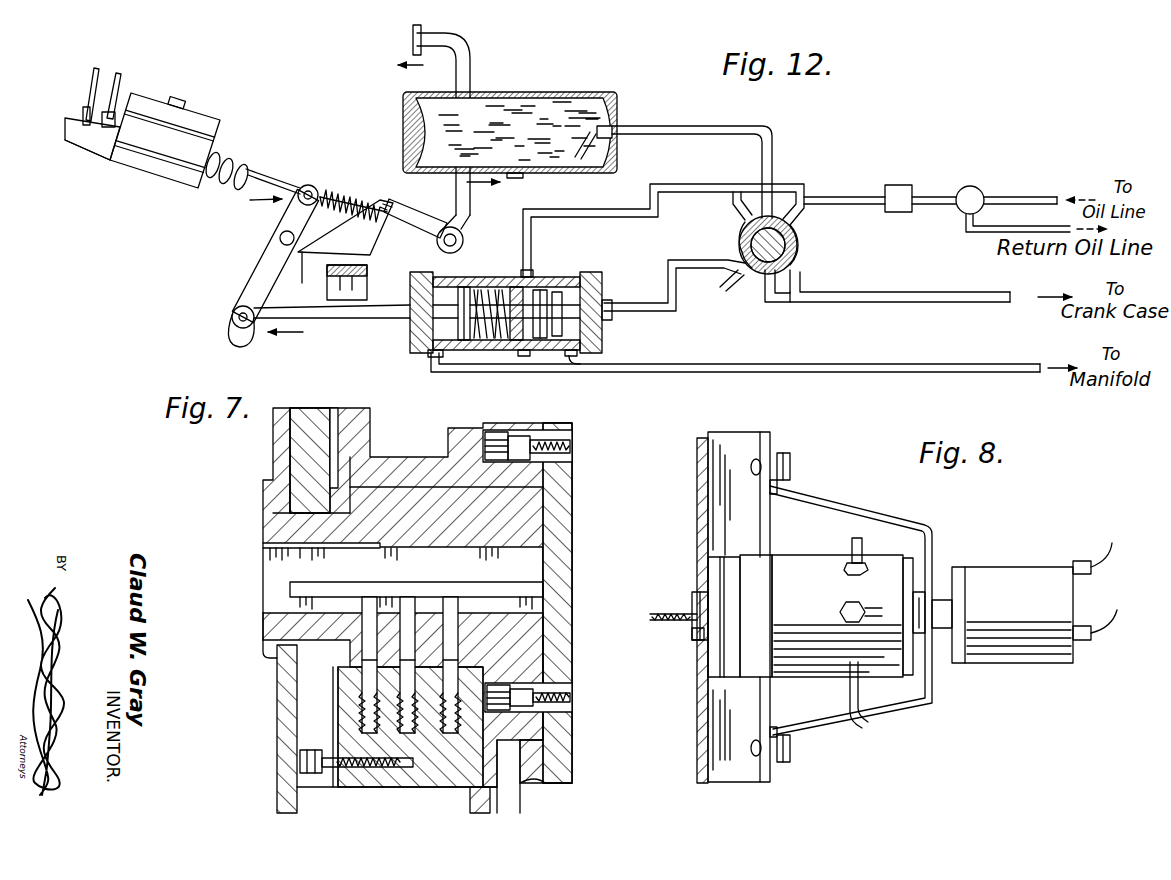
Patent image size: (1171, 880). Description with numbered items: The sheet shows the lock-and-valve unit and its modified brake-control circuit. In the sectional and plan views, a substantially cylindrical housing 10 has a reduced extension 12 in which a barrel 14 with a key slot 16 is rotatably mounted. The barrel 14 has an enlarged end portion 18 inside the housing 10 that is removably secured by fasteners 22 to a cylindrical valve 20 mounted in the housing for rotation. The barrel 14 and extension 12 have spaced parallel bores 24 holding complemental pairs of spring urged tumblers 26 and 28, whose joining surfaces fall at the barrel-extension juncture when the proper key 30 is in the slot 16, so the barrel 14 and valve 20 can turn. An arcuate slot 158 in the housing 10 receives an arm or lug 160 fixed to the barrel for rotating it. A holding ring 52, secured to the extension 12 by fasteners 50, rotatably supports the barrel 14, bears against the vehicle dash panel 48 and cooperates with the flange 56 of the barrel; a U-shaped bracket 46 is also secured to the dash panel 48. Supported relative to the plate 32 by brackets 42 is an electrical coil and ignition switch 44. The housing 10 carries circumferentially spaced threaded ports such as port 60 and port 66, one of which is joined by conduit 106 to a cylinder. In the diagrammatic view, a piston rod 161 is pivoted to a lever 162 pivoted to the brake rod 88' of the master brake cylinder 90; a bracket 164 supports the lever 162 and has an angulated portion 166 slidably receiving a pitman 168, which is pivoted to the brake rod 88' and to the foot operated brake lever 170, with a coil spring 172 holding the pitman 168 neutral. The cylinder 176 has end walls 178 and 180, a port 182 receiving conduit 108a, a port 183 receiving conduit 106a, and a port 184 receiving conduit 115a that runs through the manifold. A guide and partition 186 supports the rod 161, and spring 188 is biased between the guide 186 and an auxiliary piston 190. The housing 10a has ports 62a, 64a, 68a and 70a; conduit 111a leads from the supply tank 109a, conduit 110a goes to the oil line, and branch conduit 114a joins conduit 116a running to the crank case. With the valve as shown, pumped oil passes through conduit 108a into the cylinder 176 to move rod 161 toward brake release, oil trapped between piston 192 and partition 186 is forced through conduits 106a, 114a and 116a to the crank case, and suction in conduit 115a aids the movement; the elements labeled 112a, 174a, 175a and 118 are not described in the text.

In FIG. 12, the master brake cylinder 90 is at (157, 163).
In FIG. 12, the brake rod 88' is at (256, 167).
In FIG. 12, the lever or link 162 is at (263, 270).
In FIG. 12, the coil spring 172 is at (343, 187).
In FIG. 12, the bracket 164 is at (302, 256).
In FIG. 12, the angulated portion 166 is at (393, 203).
In FIG. 12, the pitman 168 is at (402, 227).
In FIG. 12, the end wall 180 is at (410, 285).
In FIG. 12, the piston rod 161 is at (352, 320).
In FIG. 12, the foot operated brake lever 170 is at (470, 65).
In FIG. 12, the supply tank 109a is at (570, 92).
In FIG. 12, the conduit 111a is at (695, 126).
In FIG. 12, the conduit 106a is at (632, 217).
In FIG. 12, the port 183 is at (531, 270).
In FIG. 12, the port 60 is at (806, 200).
In FIG. 12, the pipe 112a is at (820, 205).
In FIG. 12, the filter 174a is at (893, 185).
In FIG. 12, the relief valve 175a is at (973, 186).
In FIG. 12, the conduit 110a is at (1025, 196).
In FIG. 12, the housing 10a is at (748, 220).
In FIG. 12, the port 62a is at (798, 236).
In FIG. 12, the port 64a is at (797, 252).
In FIG. 12, the port 70a is at (744, 230).
In FIG. 12, the port 68a is at (742, 252).
In FIG. 12, the port 66 is at (752, 278).
In FIG. 12, the conduit 108a is at (668, 313).
In FIG. 12, the branch conduit 114a is at (800, 283).
In FIG. 12, the conduit 116a is at (782, 303).
In FIG. 12, the conduit 115a is at (782, 368).
In FIG. 12, the end wall 178 is at (603, 283).
In FIG. 12, the port 182 is at (604, 335).
In FIG. 12, the auxiliary piston 190 is at (455, 278).
In FIG. 12, the spring 188 is at (477, 352).
In FIG. 12, the cylinder 176 is at (545, 278).
In FIG. 12, the port 184 is at (425, 352).
In FIG. 12, the guide and partition 186 is at (522, 345).
In FIG. 12, the piston 192 is at (572, 356).
In FIG. 7, the enlarged end portion 18 is at (545, 478).
In FIG. 7, the holding ring 52 is at (292, 452).
In FIG. 8, the holding ring 52 is at (712, 566).
In FIG. 7, the barrel 14 is at (410, 490).
In FIG. 8, the barrel 14 is at (698, 636).
In FIG. 7, the cylindrical valve 20 is at (565, 532).
In FIG. 7, the fasteners 22 is at (517, 440).
In FIG. 7, the key slot 16 is at (262, 549).
In FIG. 7, the bores or seats 24 is at (460, 642).
In FIG. 7, the vehicle dash panel 48 is at (283, 740).
In FIG. 8, the vehicle dash panel 48 is at (700, 748).
In FIG. 7, the flange 56 is at (266, 660).
In FIG. 8, the flange 56 is at (698, 598).
In FIG. 7, the reduced extension 12 is at (430, 787).
In FIG. 8, the reduced extension 12 is at (760, 572).
In FIG. 7, the tumblers 26 is at (457, 603).
In FIG. 7, the tumblers 28 is at (523, 686).
In FIG. 7, the fasteners 50 is at (350, 775).
In FIG. 7, the arm or lug 160 is at (518, 797).
In FIG. 7, the arcuate slot 158 is at (547, 788).
In FIG. 8, the housing 10 is at (885, 567).
In FIG. 8, the plate 32 is at (912, 568).
In FIG. 8, the brackets 42 is at (940, 612).
In FIG. 8, the electrical coil and ignition switch 44 is at (1027, 662).
In FIG. 8, the stud 118 is at (842, 618).
In FIG. 8, the conduit 106 is at (849, 700).
In FIG. 8, the U-shaped bracket 46 is at (892, 712).
In FIG. 8, the key 30 is at (662, 613).